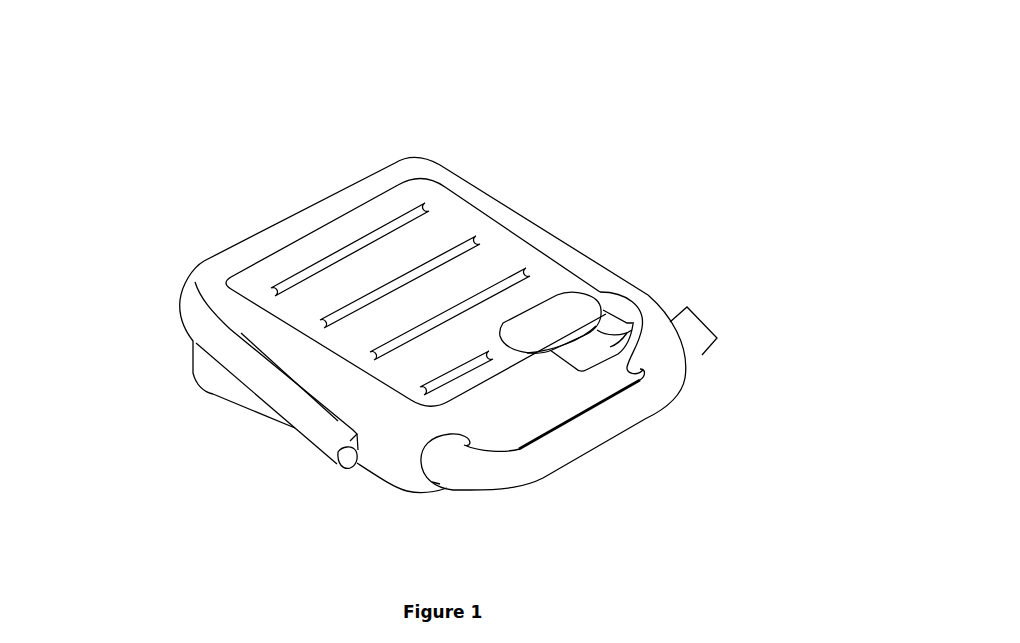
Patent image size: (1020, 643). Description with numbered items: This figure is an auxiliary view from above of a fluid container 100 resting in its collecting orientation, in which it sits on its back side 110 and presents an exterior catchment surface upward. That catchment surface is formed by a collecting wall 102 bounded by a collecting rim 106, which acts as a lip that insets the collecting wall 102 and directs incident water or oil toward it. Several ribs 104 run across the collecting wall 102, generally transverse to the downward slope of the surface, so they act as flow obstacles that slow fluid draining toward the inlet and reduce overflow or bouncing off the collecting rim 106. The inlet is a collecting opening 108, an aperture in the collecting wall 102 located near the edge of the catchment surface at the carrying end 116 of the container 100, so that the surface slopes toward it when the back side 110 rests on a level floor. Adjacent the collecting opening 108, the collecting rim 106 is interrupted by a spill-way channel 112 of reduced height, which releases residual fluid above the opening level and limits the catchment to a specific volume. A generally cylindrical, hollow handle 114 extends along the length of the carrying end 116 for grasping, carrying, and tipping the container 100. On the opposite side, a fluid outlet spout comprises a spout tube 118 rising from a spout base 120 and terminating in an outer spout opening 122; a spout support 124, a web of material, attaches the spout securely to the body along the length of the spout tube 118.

The fluid container 100 is at (450, 297).
The collecting wall 102 is at (463, 277).
The ribs 104 is at (428, 388).
The collecting rim 106 is at (272, 238).
The collecting opening 108 is at (575, 312).
The back side 110 is at (415, 491).
The spill-way channel 112 is at (610, 330).
The handle 114 is at (610, 418).
The carrying end 116 is at (702, 323).
The spout tube 118 is at (262, 390).
The spout base 120 is at (190, 315).
The outer spout opening 122 is at (351, 463).
The spout support 124 is at (330, 428).